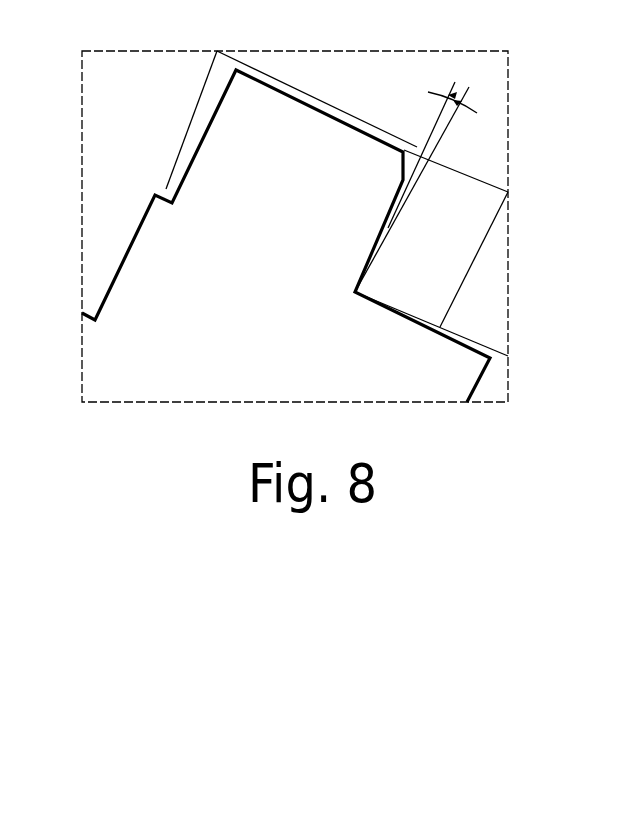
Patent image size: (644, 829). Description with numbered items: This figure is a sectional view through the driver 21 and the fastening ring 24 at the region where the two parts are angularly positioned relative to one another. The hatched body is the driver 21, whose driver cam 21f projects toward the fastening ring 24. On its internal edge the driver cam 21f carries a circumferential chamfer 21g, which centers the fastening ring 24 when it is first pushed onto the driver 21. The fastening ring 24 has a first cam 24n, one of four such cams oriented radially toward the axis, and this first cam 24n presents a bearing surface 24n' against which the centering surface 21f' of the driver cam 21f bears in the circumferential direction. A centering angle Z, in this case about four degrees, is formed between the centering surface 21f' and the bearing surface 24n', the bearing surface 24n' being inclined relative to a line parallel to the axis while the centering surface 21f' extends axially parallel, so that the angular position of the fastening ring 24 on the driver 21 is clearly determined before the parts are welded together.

The driver 21 is at (337, 137).
The driver cam 21f is at (271, 120).
The circumferential chamfer 21g is at (408, 157).
The centering angle Z is at (458, 92).
The fastening ring 24 is at (471, 174).
The first cam 24n is at (484, 330).
The bearing surface 24n' is at (510, 216).
The centering surface 21f' is at (505, 277).